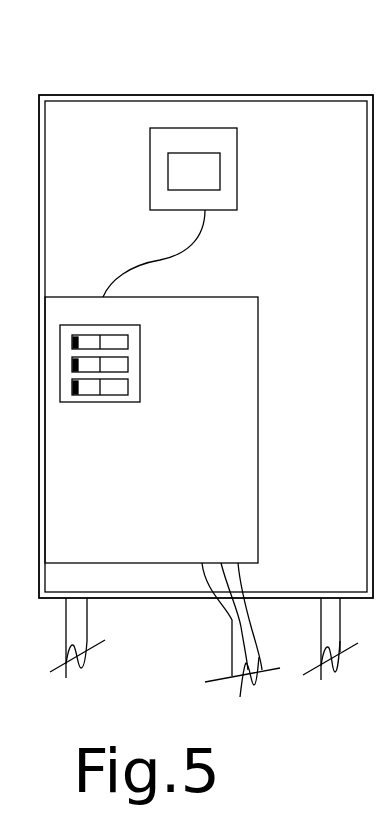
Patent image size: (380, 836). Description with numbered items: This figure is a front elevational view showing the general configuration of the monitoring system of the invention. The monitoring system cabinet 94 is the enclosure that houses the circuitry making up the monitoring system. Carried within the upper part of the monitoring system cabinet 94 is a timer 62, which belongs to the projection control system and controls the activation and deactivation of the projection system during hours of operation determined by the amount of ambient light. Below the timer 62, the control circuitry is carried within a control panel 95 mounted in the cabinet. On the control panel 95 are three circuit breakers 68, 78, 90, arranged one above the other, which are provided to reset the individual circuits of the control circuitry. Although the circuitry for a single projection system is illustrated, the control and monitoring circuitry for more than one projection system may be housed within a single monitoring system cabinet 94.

The monitoring system cabinet 94 is at (204, 95).
The timer 62 is at (237, 188).
The control panel 95 is at (148, 539).
The circuit breaker 90 is at (117, 388).
The circuit breaker 68 is at (117, 342).
The circuit breaker 78 is at (117, 364).